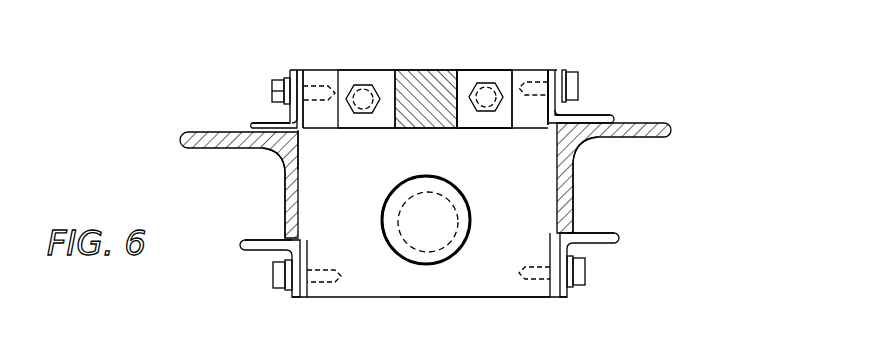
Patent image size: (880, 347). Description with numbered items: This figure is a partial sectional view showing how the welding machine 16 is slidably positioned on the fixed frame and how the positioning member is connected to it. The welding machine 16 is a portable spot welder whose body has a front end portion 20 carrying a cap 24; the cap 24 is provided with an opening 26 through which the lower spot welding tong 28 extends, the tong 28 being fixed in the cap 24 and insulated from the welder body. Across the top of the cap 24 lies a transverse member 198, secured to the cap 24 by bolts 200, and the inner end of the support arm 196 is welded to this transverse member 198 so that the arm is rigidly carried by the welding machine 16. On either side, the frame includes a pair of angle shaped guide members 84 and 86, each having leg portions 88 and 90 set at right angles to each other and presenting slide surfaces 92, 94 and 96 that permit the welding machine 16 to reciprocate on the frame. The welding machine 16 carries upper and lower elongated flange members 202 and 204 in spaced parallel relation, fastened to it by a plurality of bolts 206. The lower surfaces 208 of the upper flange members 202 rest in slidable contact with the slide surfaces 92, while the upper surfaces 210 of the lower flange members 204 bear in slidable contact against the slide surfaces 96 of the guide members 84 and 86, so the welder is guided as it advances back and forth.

The welding machine 16 is at (428, 153).
The front end portion 20 is at (358, 300).
The cap 24 is at (505, 299).
The opening 26 is at (386, 218).
The lower spot welding tong 28 is at (378, 232).
The guide member 84 is at (270, 146).
The guide member 86 is at (578, 143).
The leg portion 88 is at (178, 134).
The leg portion 90 is at (292, 199).
The slide surface 92 is at (250, 125).
The slide surface 94 is at (300, 164).
The slide surface 96 is at (266, 251).
The support arm 196 is at (427, 80).
The transverse member 198 is at (493, 70).
The bolt 200 is at (366, 84).
The upper elongated flange member 202 is at (295, 70).
The lower elongated flange member 204 is at (244, 244).
The bolt 206 is at (270, 85).
The lower surface 208 is at (300, 135).
The upper surface 210 is at (294, 238).